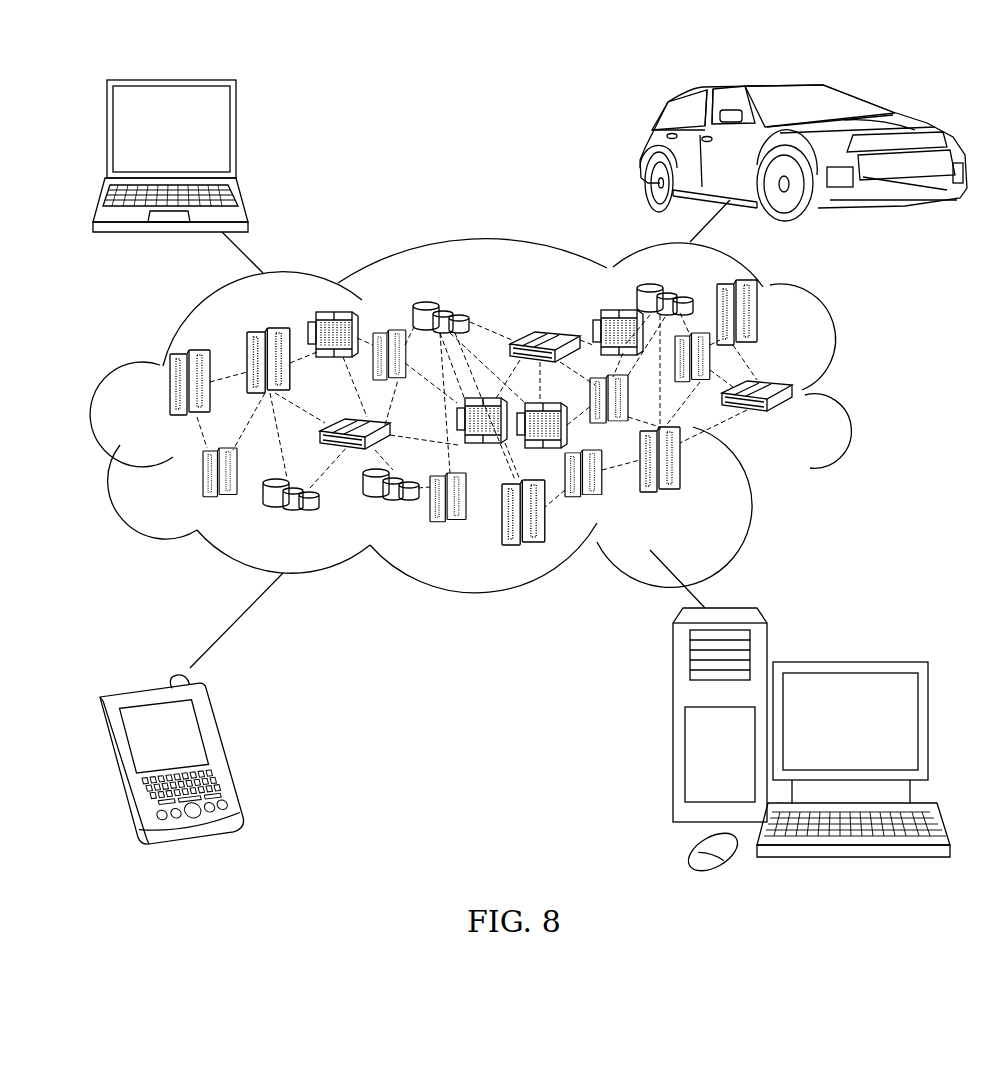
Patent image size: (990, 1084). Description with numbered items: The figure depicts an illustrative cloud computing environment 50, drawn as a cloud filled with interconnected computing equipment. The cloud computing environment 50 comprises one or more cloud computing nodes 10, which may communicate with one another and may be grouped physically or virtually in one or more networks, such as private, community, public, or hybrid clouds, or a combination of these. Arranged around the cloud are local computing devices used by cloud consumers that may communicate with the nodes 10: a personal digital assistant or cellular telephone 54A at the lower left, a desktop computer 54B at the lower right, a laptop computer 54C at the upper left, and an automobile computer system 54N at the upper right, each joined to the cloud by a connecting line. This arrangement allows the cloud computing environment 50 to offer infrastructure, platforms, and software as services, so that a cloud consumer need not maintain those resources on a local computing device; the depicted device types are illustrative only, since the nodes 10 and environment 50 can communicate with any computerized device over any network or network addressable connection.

The laptop computer 54C is at (236, 137).
The automobile computer system 54N is at (645, 152).
The personal digital assistant or cellular telephone 54A is at (225, 752).
The desktop computer 54B is at (848, 662).
The cloud computing environment 50 is at (497, 453).
The cloud computing node 10 is at (800, 421).